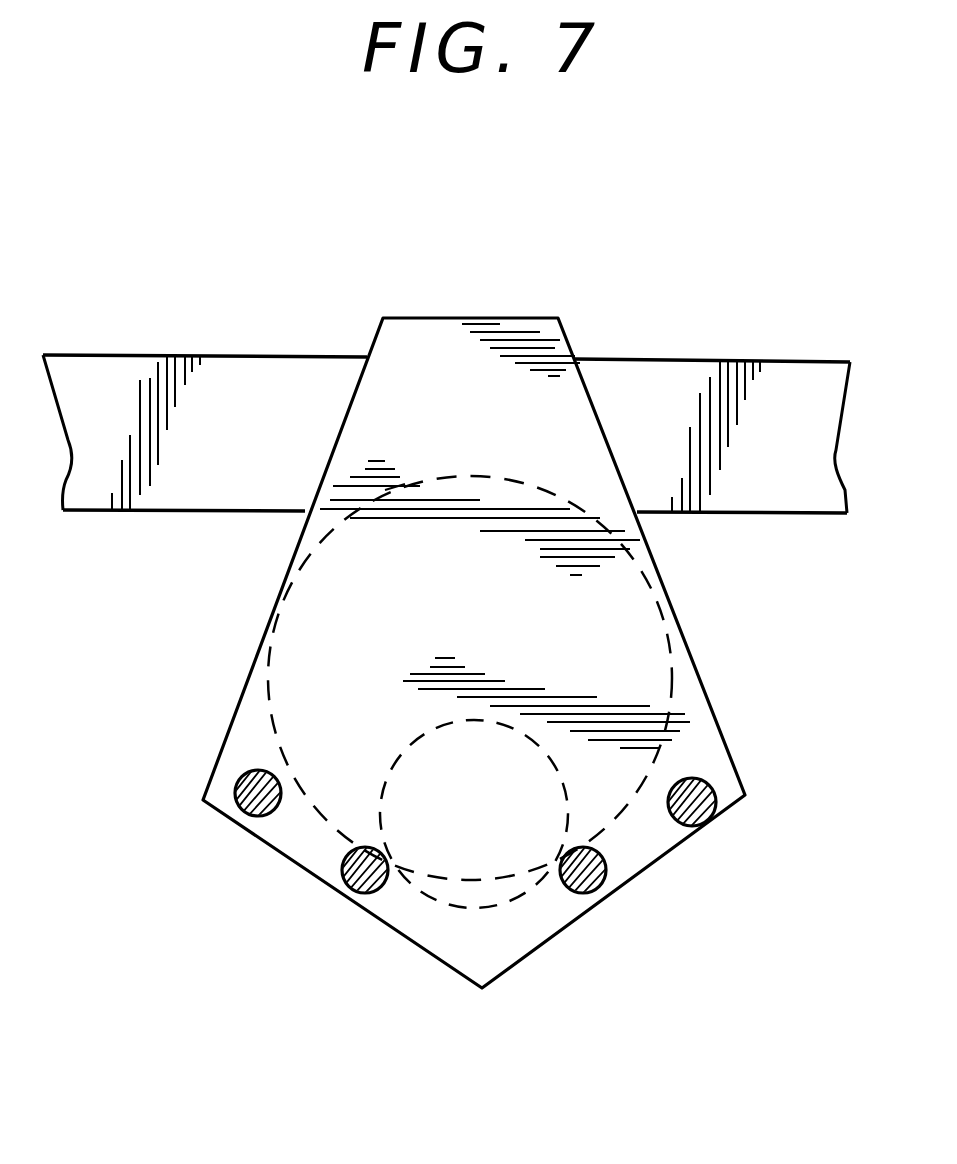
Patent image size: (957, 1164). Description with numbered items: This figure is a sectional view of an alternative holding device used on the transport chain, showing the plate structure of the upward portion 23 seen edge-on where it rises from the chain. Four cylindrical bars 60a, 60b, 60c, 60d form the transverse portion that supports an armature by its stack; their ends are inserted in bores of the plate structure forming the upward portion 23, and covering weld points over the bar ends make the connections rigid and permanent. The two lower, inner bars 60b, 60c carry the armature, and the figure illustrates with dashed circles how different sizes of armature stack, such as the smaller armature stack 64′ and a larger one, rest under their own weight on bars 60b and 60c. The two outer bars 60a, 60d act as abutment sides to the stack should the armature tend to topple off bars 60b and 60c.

The upward portion 23 is at (545, 328).
The cylindrical bar 60a is at (702, 813).
The cylindrical bar 60b is at (597, 878).
The cylindrical bar 60c is at (357, 888).
The cylindrical bar 60d is at (245, 813).
The armature stack 64′ is at (408, 748).